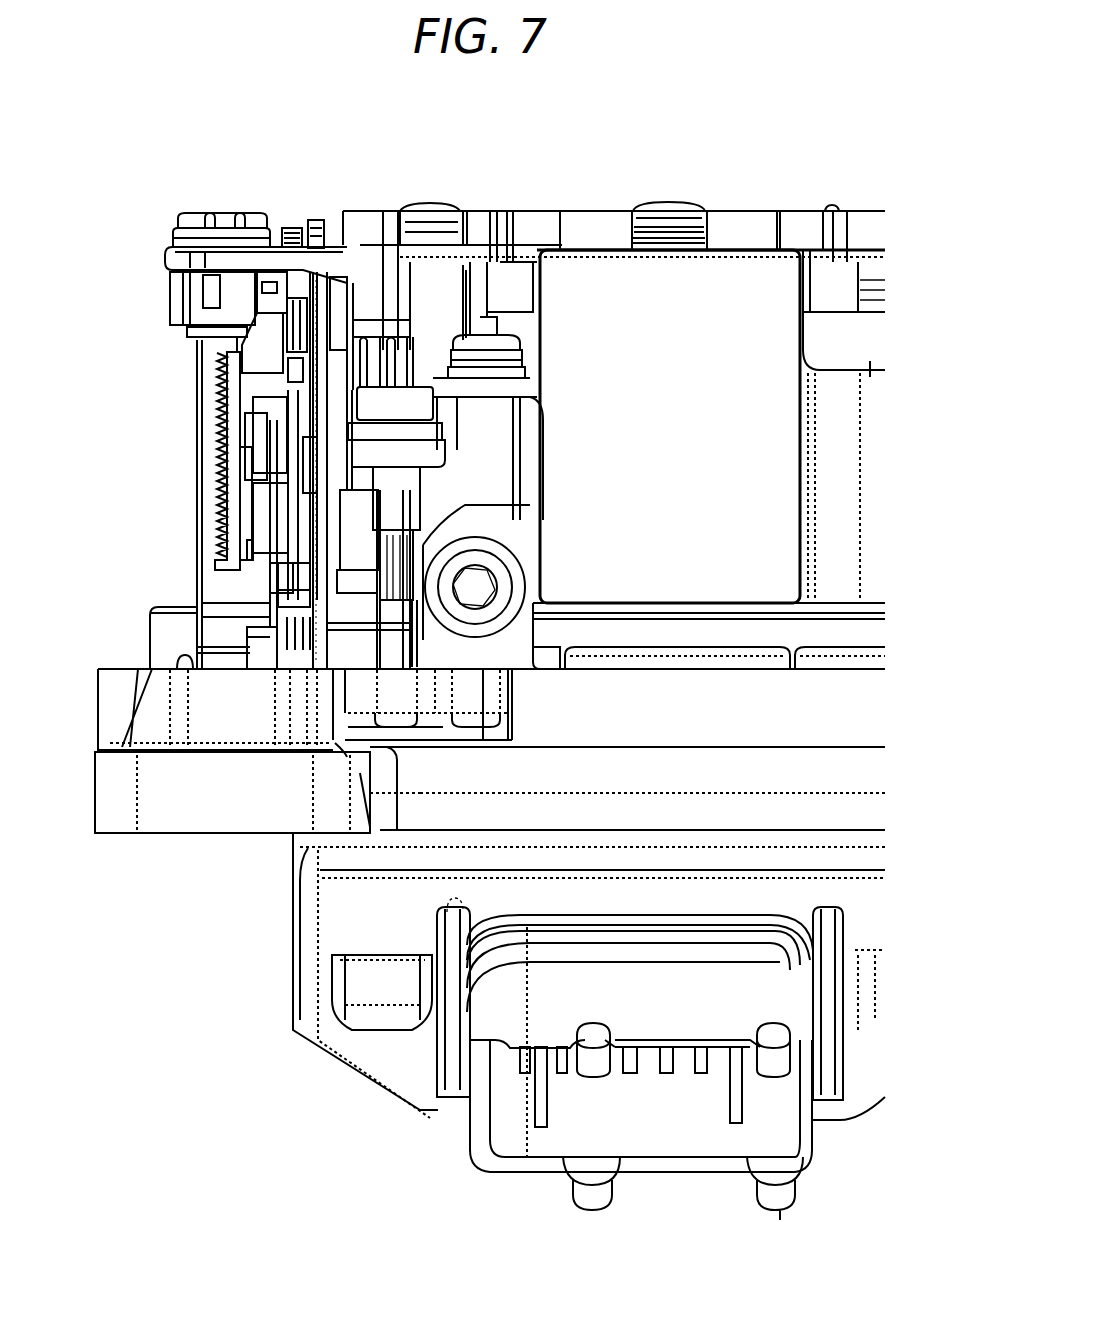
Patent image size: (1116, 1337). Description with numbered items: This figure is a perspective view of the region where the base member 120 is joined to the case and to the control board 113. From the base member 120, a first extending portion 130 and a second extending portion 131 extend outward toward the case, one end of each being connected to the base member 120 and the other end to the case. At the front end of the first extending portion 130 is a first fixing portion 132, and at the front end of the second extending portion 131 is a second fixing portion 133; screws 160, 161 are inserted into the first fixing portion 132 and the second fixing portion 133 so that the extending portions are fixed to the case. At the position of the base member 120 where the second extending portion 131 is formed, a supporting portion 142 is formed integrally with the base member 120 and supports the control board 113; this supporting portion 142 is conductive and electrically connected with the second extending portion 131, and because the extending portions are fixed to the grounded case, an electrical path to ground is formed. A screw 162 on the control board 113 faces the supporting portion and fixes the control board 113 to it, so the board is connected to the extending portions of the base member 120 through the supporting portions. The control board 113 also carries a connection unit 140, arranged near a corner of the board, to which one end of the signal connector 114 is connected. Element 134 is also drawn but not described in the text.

The control board 113 is at (316, 220).
The signal connector 114 is at (200, 548).
The base member 120 is at (450, 283).
The first extending portion 130 is at (172, 262).
The second extending portion 131 is at (290, 228).
The first fixing portion 132 is at (172, 235).
The second fixing portion 133 is at (222, 218).
The gear 134 is at (375, 447).
The connection unit 140 is at (237, 345).
The supporting portion 142 is at (335, 305).
The screw 160 is at (185, 222).
The screw 161 is at (250, 215).
The screw 162 is at (390, 405).